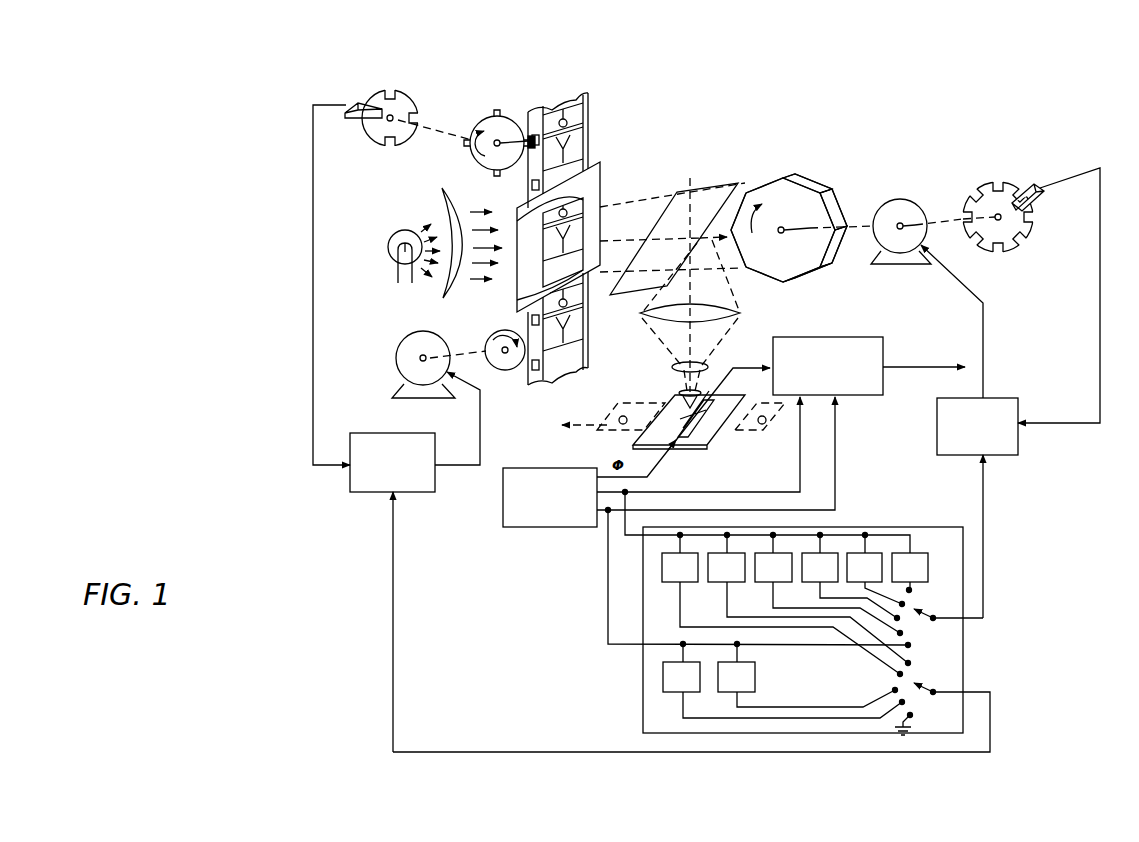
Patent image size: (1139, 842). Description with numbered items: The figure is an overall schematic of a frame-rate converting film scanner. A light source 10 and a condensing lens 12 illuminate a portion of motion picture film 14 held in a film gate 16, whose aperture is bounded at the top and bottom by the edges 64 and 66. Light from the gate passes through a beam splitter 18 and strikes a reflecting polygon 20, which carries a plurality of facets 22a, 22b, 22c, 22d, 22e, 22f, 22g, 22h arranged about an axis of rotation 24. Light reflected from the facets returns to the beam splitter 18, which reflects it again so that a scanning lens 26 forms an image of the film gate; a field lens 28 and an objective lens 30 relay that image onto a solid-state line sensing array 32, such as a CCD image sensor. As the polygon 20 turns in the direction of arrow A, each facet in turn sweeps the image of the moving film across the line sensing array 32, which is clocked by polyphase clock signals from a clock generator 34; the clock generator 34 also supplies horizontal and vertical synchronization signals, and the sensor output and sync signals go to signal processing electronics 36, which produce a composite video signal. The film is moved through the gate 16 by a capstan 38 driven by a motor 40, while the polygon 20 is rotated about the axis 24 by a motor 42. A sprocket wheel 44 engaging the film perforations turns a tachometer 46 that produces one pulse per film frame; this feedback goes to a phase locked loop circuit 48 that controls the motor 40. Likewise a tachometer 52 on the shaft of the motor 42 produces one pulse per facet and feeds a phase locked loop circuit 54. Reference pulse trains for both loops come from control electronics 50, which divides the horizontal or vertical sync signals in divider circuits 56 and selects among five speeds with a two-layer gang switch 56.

The light source 10 is at (393, 233).
The condensing lens 12 is at (442, 202).
The motion picture film 14 is at (590, 116).
The film gate 16 is at (558, 235).
The beam splitter 18 is at (718, 184).
The reflecting polygon 20 is at (805, 217).
The facet 22a is at (745, 196).
The facet 22b is at (738, 258).
The facet 22c is at (773, 278).
The facet 22d is at (808, 277).
The facet 22e is at (828, 256).
The facet 22f is at (830, 213).
The facet 22g is at (812, 174).
The facet 22h is at (770, 182).
The axis of rotation 24 is at (826, 248).
The scanning lens 26 is at (737, 318).
The field lens 28 is at (677, 366).
The objective lens 30 is at (683, 393).
The line sensing array 32 is at (697, 440).
The clock generator 34 is at (557, 528).
The signal processing electronics 36 is at (840, 337).
The capstan 38 is at (491, 342).
The motor 40 is at (399, 348).
The motor 42 is at (910, 199).
The sprocket wheel 44 is at (506, 129).
The tachometer 46 is at (418, 98).
The phase locked loop circuit 48 is at (418, 493).
The control electronics 50 is at (691, 627).
The tachometer 52 is at (1002, 182).
The phase locked loop circuit 54 is at (1019, 441).
The divider circuits 56 is at (933, 688).
The top of the film gate aperture 64 is at (517, 221).
The bottom of the film gate aperture 66 is at (517, 298).